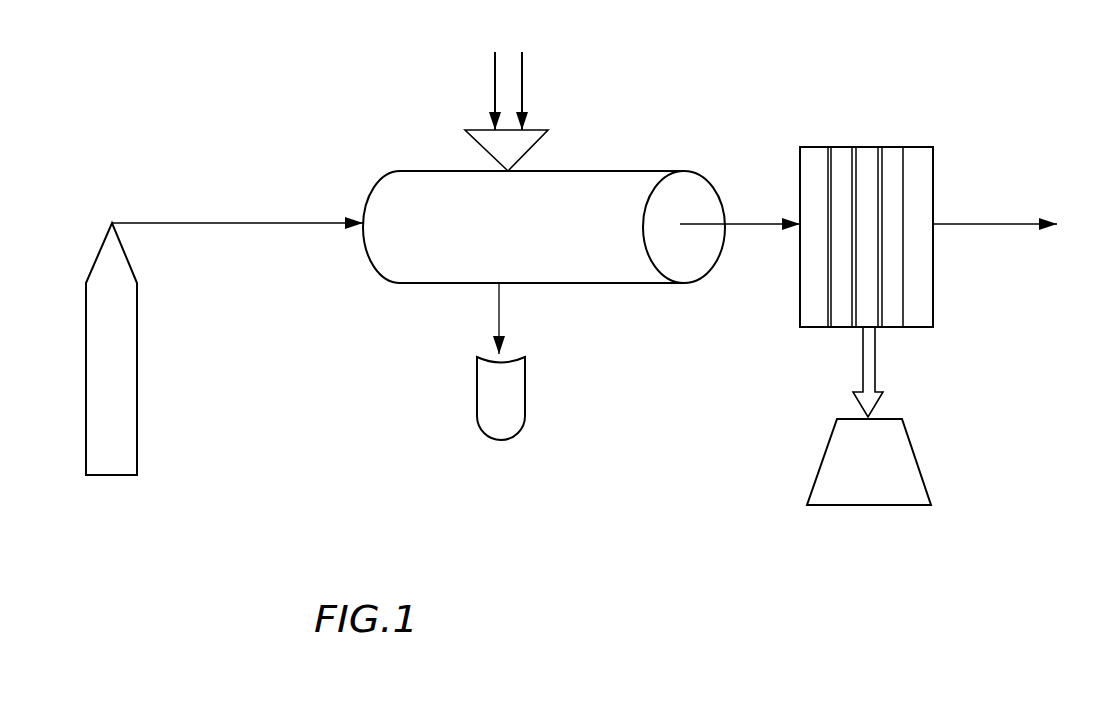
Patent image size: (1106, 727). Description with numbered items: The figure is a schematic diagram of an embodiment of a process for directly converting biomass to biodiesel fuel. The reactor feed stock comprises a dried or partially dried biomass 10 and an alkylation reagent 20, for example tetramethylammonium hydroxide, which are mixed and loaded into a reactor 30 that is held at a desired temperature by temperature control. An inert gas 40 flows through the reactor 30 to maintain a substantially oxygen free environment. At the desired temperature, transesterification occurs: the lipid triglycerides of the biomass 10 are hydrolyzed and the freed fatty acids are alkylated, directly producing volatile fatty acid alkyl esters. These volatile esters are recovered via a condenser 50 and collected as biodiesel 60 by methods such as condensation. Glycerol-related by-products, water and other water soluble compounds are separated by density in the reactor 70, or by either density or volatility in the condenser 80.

The dried or partially dried biomass 10 is at (488, 83).
The alkylation reagent 20 is at (528, 83).
The reactor 30 is at (516, 230).
The inert gas 40 is at (138, 395).
The condenser 50 is at (877, 147).
The biodiesel 60 is at (843, 505).
The by-products separated in the reactor 70 is at (507, 440).
The by-products separated in the condenser 80 is at (1081, 226).